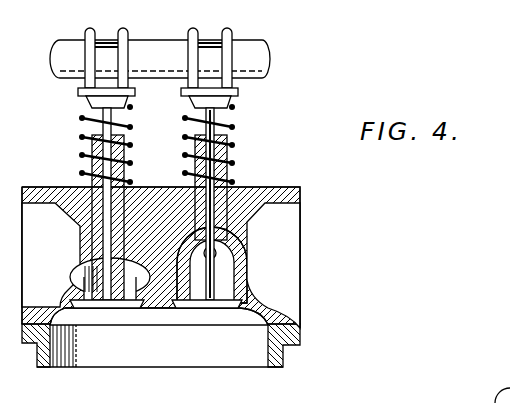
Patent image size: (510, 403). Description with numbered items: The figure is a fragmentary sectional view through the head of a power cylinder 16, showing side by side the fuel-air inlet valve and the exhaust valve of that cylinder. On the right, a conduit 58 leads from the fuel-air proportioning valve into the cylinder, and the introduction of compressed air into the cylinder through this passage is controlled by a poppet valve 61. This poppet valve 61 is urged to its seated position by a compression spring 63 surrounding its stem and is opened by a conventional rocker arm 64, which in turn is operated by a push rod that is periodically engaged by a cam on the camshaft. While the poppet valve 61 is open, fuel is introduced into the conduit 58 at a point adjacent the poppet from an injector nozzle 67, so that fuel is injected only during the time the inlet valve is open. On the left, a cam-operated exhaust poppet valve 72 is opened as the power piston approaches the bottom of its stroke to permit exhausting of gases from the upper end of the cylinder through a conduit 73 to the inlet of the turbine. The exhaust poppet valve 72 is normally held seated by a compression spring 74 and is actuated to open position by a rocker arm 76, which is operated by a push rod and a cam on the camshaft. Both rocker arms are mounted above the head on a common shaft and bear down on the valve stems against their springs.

The power cylinder 16 is at (175, 367).
The conduit 58 is at (232, 262).
The poppet valve 61 is at (200, 308).
The compression spring 63 is at (234, 145).
The rocker arm 64 is at (215, 64).
The injector nozzle 67 is at (232, 252).
The exhaust poppet valve 72 is at (100, 308).
The conduit 73 is at (125, 268).
The compression spring 74 is at (82, 118).
The rocker arm 76 is at (110, 55).